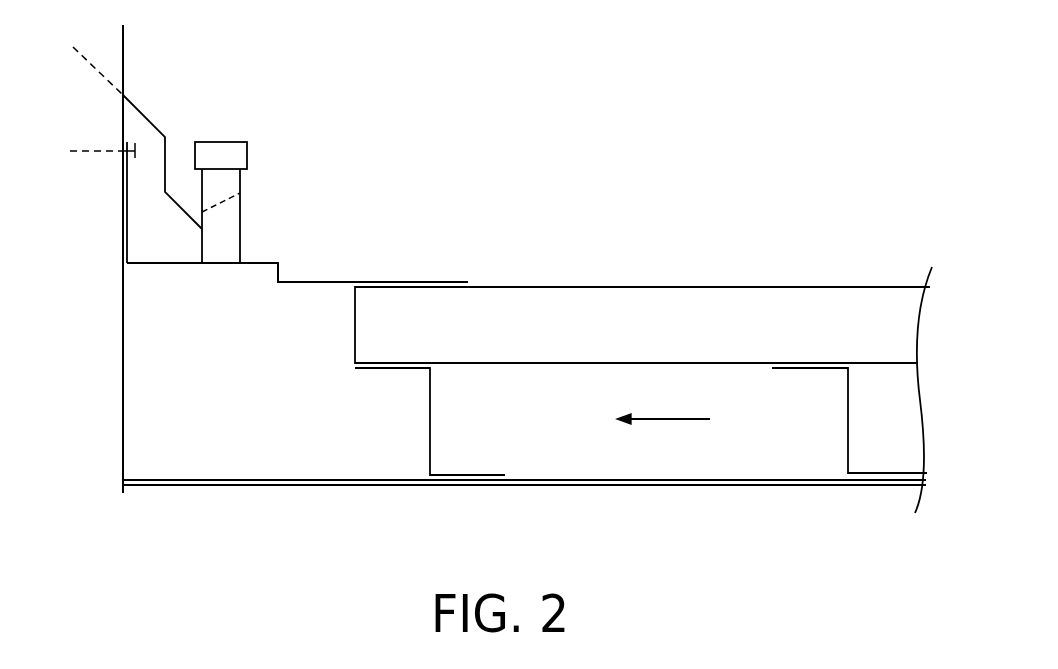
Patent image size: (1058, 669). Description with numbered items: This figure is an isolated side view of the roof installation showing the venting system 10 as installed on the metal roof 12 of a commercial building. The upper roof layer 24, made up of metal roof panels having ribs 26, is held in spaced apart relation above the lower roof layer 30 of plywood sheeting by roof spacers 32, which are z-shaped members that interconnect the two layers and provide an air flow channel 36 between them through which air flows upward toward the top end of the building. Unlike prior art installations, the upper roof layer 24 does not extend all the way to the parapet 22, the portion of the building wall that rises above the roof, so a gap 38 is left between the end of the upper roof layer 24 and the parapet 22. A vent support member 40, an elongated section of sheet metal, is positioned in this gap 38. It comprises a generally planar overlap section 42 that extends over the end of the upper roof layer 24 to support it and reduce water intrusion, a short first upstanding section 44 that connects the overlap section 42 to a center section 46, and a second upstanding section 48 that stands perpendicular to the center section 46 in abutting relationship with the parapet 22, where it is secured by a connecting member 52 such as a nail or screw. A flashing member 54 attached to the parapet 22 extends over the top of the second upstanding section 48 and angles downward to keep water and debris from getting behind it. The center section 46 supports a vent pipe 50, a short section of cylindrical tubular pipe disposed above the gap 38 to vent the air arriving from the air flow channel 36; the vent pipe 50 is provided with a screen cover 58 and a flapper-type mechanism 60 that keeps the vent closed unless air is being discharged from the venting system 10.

The venting system 10 is at (386, 146).
The metal roof 12 is at (679, 230).
The parapet 22 is at (123, 377).
The upper roof layer 24 is at (775, 285).
The ribs 26 is at (618, 287).
The lower roof layer 30 is at (580, 487).
The roof spacers 32 is at (430, 420).
The air flow channel 36 is at (685, 419).
The gap 38 is at (315, 457).
The vent support member 40 is at (337, 267).
The overlap section 42 is at (305, 283).
The first upstanding section 44 is at (278, 268).
The center section 46 is at (157, 265).
The second upstanding section 48 is at (123, 235).
The vent pipe 50 is at (259, 213).
The connecting member 52 is at (90, 153).
The flashing member 54 is at (142, 110).
The screen cover 58 is at (218, 140).
The flapper-type mechanism 60 is at (230, 195).